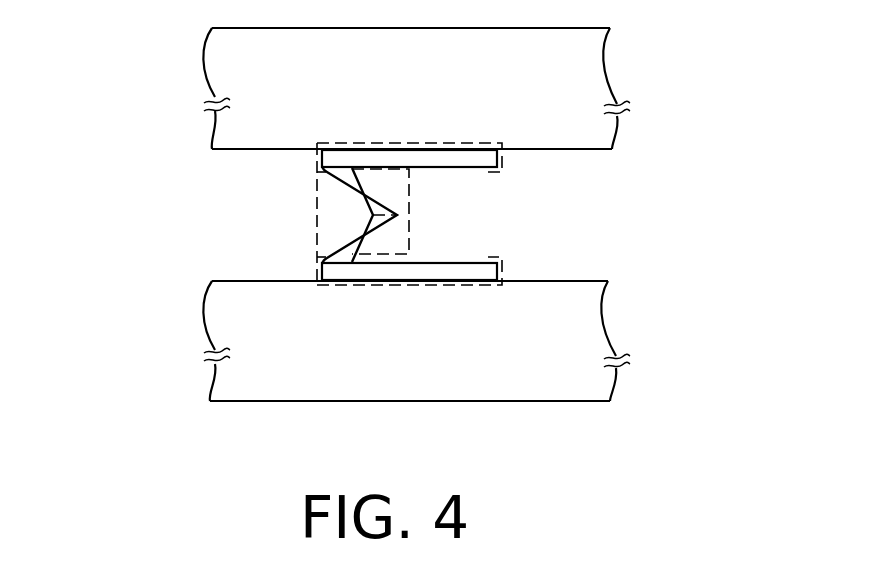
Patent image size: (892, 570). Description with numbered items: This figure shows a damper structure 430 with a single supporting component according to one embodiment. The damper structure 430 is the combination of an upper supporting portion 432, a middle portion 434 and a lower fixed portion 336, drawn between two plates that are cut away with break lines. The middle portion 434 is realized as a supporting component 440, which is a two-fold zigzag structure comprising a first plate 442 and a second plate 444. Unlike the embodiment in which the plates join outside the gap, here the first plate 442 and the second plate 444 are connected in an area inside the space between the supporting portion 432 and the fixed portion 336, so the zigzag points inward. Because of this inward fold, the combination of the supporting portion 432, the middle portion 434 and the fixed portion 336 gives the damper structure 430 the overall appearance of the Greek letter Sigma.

The damper structure 430 is at (742, 148).
The supporting portion 432 is at (502, 163).
The middle portion 434 is at (409, 230).
The fixed portion 336 is at (502, 265).
The supporting component 440 is at (120, 183).
The first plate 442 is at (372, 202).
The second plate 444 is at (372, 232).